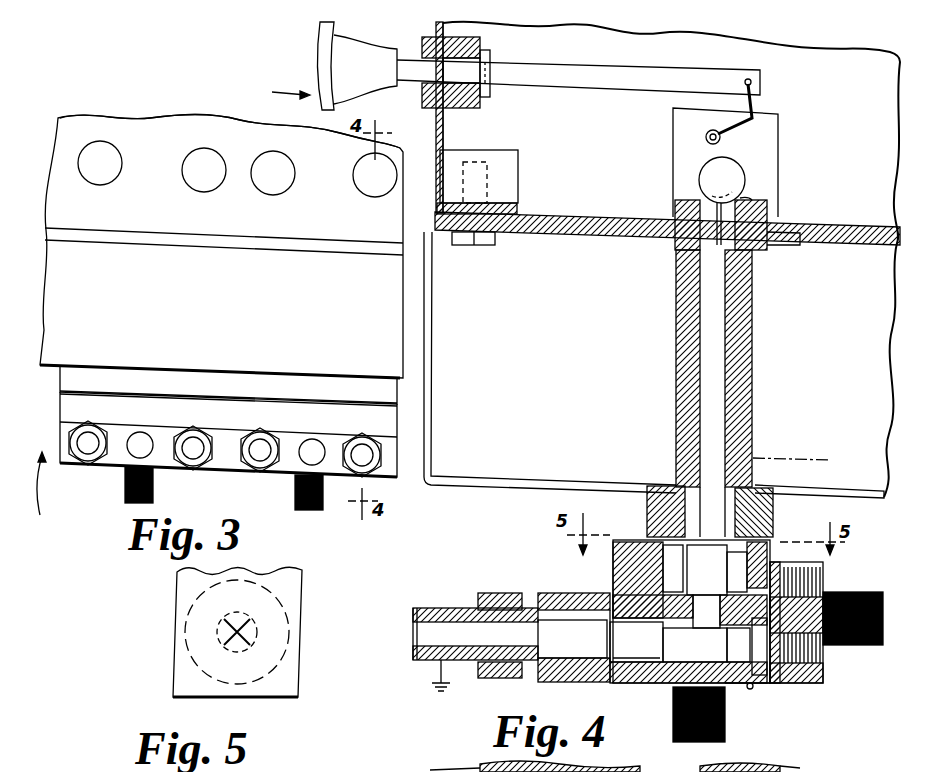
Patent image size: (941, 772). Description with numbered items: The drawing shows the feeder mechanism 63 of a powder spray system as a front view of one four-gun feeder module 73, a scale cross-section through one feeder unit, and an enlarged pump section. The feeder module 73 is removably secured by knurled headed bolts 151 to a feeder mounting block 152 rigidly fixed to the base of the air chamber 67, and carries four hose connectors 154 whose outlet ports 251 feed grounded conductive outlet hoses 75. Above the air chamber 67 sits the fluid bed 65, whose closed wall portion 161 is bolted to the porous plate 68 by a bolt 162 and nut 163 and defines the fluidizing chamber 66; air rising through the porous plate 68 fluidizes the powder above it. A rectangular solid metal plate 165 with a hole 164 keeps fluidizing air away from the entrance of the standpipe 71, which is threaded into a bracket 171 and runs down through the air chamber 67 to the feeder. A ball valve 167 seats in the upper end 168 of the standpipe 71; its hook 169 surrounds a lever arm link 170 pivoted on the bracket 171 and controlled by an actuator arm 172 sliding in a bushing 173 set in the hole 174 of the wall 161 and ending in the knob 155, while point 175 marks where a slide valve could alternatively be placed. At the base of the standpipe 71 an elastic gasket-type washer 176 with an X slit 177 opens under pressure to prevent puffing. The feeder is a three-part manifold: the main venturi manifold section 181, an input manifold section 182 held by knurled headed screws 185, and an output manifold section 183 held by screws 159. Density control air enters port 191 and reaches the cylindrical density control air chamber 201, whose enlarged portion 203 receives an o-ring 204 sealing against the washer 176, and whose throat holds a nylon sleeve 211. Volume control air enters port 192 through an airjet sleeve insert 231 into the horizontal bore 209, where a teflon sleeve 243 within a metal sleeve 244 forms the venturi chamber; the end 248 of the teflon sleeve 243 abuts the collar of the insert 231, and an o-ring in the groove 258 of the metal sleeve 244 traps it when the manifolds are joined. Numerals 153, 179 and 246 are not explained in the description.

In FIG. 3, the feeder mechanism 63 is at (42, 493).
In FIG. 4, the feeder mechanism 63 is at (271, 91).
In FIG. 3, the fluid bed 65 is at (230, 132).
In FIG. 4, the fluid bed 65 is at (433, 27).
In FIG. 4, the fluidizing chamber 66 is at (671, 259).
In FIG. 3, the air chamber 67 is at (221, 247).
In FIG. 4, the air chamber 67 is at (654, 365).
In FIG. 3, the porous plate 68 is at (255, 244).
In FIG. 4, the porous plate 68 is at (585, 218).
In FIG. 4, the standpipe 71 is at (752, 370).
In FIG. 3, the feeder module 73 is at (233, 420).
In FIG. 4, the feeder module 73 is at (562, 565).
In FIG. 4, the outlet hose 75 is at (420, 664).
In FIG. 3, the knurled headed bolt 151 is at (125, 497).
In FIG. 4, the knurled headed bolt 151 is at (725, 735).
In FIG. 3, the feeder mounting block 152 is at (113, 385).
In FIG. 4, the feeder mounting block 152 is at (645, 496).
In FIG. 4, the base 153 is at (780, 764).
In FIG. 3, the hose connector 154 is at (70, 442).
In FIG. 4, the hose connector 154 is at (526, 603).
In FIG. 3, the knob 155 is at (122, 170).
In FIG. 4, the knob 155 is at (357, 66).
In FIG. 3, the screw 159 is at (170, 420).
In FIG. 3, the closed wall portion 161 is at (224, 207).
In FIG. 4, the closed wall portion 161 is at (443, 128).
In FIG. 4, the bolt 162 is at (468, 248).
In FIG. 4, the nut 163 is at (518, 178).
In FIG. 4, the hole 164 is at (763, 255).
In FIG. 4, the rectangular solid metal plate 165 is at (803, 246).
In FIG. 4, the ball valve 167 is at (705, 181).
In FIG. 4, the upper end 168 is at (745, 197).
In FIG. 4, the hook 169 is at (705, 137).
In FIG. 4, the lever arm link 170 is at (747, 117).
In FIG. 4, the bracket 171 is at (778, 152).
In FIG. 4, the actuator arm 172 is at (578, 77).
In FIG. 4, the bushing 173 is at (482, 45).
In FIG. 4, the hole 174 is at (464, 71).
In FIG. 4, the point 175 is at (807, 463).
In FIG. 4, the gasket-type washer 176 is at (773, 522).
In FIG. 5, the gasket-type washer 176 is at (297, 591).
In FIG. 4, the X slit 177 is at (638, 768).
In FIG. 5, the X slit 177 is at (229, 648).
In FIG. 3, the strip 179 is at (178, 395).
In FIG. 4, the main venturi manifold section 181 is at (750, 689).
In FIG. 4, the input manifold section 182 is at (824, 680).
In FIG. 4, the output manifold section 183 is at (600, 669).
In FIG. 4, the knurled headed screw 185 is at (847, 593).
In FIG. 4, the density control air input port 191 is at (823, 578).
In FIG. 4, the volume control air input port 192 is at (820, 657).
In FIG. 4, the density control air chamber 201 is at (653, 563).
In FIG. 4, the enlarged portion 203 is at (455, 764).
In FIG. 4, the o-ring 204 is at (560, 757).
In FIG. 4, the horizontal bore 209 is at (660, 683).
In FIG. 4, the nylon sleeve 211 is at (705, 570).
In FIG. 4, the airjet sleeve insert 231 is at (775, 681).
In FIG. 4, the teflon sleeve 243 is at (695, 645).
In FIG. 4, the metal sleeve 244 is at (636, 642).
In FIG. 4, the valve seat 246 is at (714, 645).
In FIG. 4, the end 248 is at (770, 713).
In FIG. 4, the outlet port 251 is at (508, 679).
In FIG. 4, the groove 258 is at (572, 639).